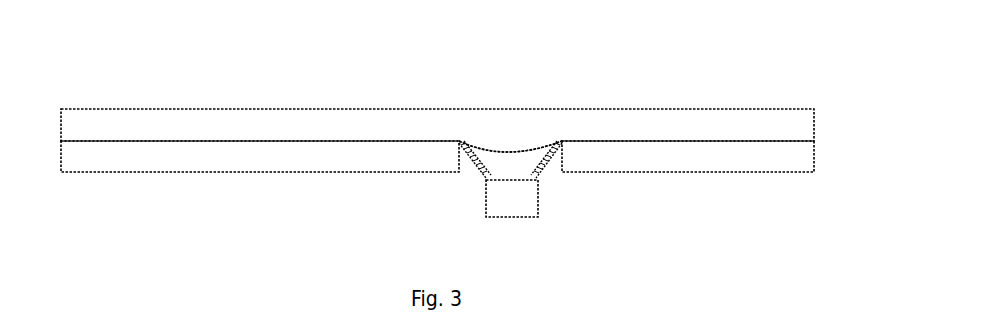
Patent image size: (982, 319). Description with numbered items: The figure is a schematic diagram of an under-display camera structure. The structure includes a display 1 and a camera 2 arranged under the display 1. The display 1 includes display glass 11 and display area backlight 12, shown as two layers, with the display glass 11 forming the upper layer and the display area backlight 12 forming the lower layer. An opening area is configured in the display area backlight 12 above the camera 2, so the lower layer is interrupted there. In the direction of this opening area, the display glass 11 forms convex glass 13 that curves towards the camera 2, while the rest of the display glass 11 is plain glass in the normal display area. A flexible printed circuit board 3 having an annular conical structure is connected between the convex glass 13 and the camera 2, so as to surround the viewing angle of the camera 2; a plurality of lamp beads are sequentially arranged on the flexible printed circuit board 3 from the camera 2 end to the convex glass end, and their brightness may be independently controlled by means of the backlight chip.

The display 1 is at (437, 113).
The display glass 11 is at (437, 105).
The display area backlight 12 is at (437, 178).
The convex glass 13 is at (554, 106).
The camera 2 is at (544, 217).
The flexible printed circuit board 3 is at (542, 185).